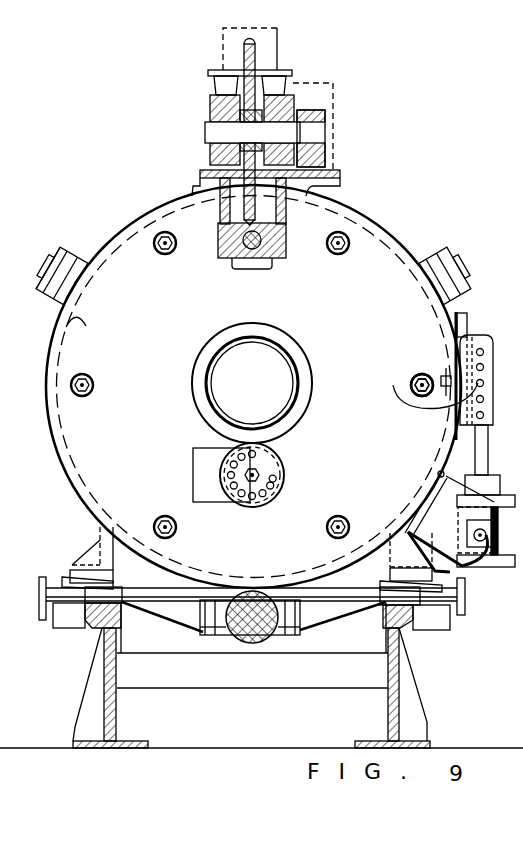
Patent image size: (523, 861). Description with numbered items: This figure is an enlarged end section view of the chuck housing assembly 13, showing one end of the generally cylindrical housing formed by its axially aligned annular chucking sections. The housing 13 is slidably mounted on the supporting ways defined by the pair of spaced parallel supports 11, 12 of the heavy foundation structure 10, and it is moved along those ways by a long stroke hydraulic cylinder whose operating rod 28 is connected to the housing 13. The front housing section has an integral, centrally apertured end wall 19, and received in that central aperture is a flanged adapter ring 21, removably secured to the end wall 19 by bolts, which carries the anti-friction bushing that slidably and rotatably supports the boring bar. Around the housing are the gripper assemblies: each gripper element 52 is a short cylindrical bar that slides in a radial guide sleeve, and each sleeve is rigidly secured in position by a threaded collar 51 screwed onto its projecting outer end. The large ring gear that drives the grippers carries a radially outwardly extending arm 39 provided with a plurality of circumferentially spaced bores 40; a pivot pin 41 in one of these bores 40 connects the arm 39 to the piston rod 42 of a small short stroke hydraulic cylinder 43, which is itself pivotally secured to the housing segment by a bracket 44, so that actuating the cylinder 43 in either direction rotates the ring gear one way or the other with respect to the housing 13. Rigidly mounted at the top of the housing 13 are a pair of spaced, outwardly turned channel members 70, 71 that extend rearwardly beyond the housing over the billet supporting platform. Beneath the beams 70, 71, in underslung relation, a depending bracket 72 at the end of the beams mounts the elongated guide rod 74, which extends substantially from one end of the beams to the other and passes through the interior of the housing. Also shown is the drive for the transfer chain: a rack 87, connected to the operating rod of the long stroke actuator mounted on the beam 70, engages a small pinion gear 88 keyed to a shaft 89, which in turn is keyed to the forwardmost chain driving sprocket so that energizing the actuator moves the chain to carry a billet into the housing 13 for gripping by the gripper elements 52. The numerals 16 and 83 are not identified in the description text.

The foundation structure 10 is at (252, 681).
The support 11 is at (107, 664).
The support 12 is at (400, 672).
The chuck housing assembly 13 is at (334, 324).
The housing 16 is at (5, 385).
The end wall 19 is at (68, 318).
The flanged adapter ring 21 is at (291, 420).
The operating rod 28 is at (290, 636).
The arm 39 is at (460, 344).
The bores 40 is at (478, 367).
The pivot pin 41 is at (422, 389).
The piston rod 42 is at (440, 470).
The short stroke hydraulic cylinder 43 is at (462, 516).
The bracket 44 is at (470, 570).
The threaded collar 51 is at (72, 258).
The gripper element 52 is at (54, 255).
The channel member 70 is at (292, 79).
The channel member 71 is at (210, 77).
The depending bracket 72 is at (284, 245).
The guide rod 74 is at (240, 262).
The vertical shaft 83 is at (256, 54).
The rack 87 is at (326, 118).
The pinion gear 88 is at (312, 115).
The shaft 89 is at (210, 131).